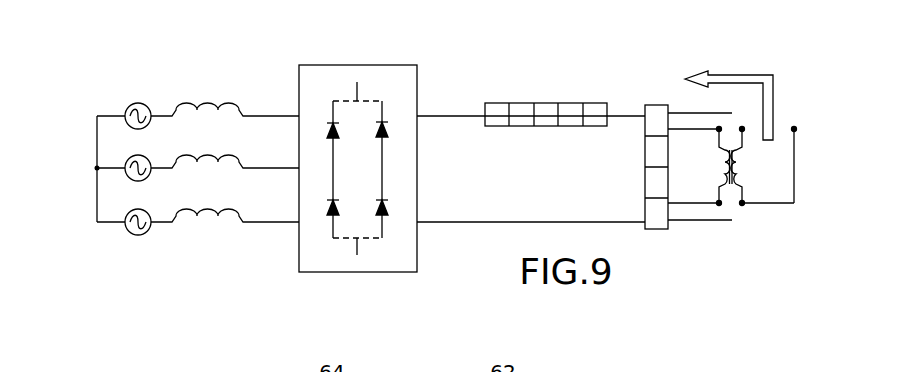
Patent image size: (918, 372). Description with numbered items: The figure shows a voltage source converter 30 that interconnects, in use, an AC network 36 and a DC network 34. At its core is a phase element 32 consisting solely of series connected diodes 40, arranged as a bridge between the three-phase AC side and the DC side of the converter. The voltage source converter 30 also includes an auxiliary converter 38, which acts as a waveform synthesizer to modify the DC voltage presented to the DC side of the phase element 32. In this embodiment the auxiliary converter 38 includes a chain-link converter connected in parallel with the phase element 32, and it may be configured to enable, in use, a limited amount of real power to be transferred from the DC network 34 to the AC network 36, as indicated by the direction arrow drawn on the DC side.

The voltage source converter 30 is at (178, 74).
The phase element 32 is at (380, 63).
The DC network 34 is at (732, 222).
The AC network 36 is at (97, 168).
The auxiliary converter 38 is at (566, 100).
The diode 40 is at (330, 129).